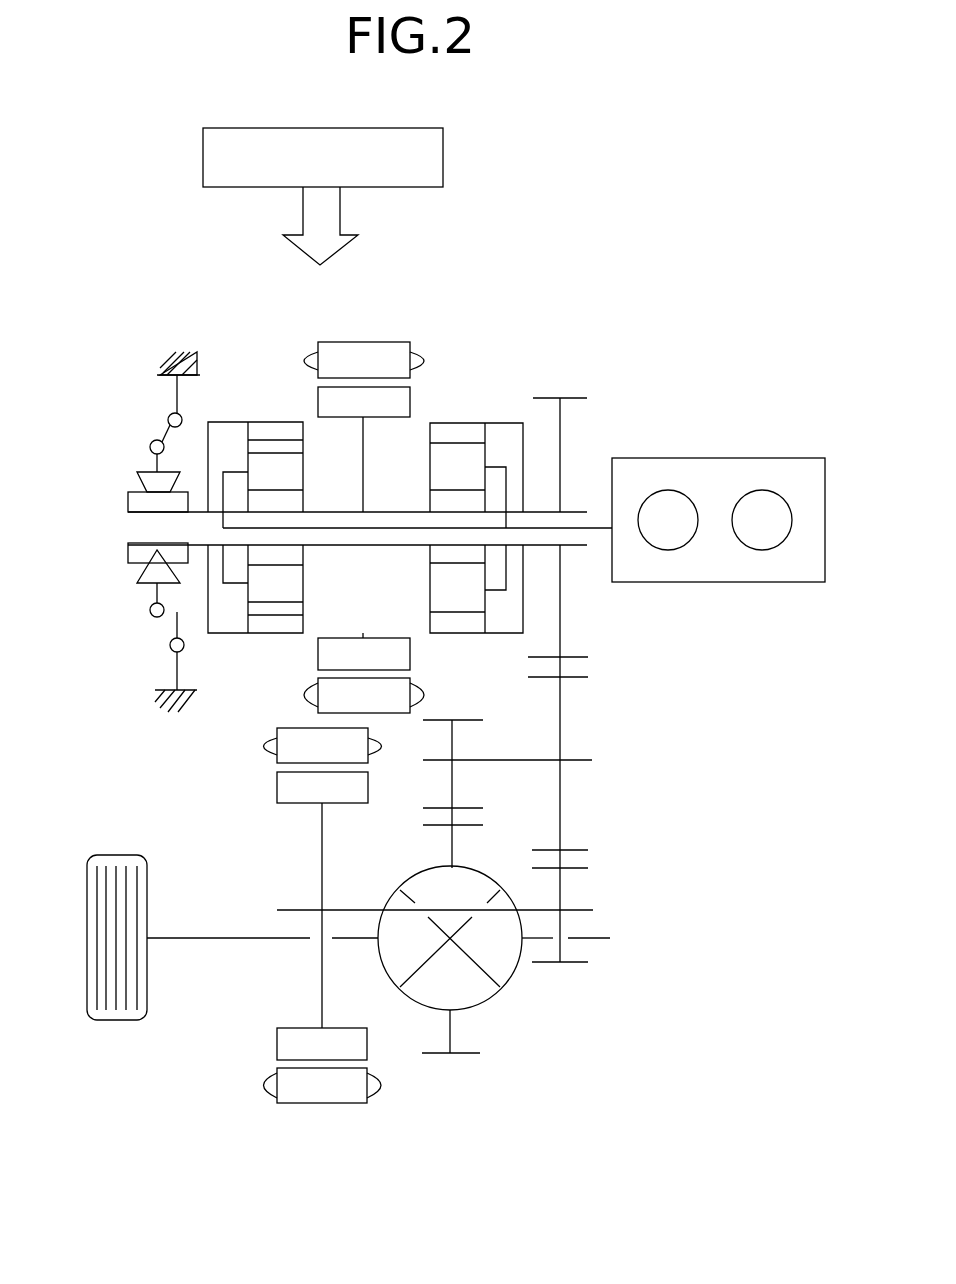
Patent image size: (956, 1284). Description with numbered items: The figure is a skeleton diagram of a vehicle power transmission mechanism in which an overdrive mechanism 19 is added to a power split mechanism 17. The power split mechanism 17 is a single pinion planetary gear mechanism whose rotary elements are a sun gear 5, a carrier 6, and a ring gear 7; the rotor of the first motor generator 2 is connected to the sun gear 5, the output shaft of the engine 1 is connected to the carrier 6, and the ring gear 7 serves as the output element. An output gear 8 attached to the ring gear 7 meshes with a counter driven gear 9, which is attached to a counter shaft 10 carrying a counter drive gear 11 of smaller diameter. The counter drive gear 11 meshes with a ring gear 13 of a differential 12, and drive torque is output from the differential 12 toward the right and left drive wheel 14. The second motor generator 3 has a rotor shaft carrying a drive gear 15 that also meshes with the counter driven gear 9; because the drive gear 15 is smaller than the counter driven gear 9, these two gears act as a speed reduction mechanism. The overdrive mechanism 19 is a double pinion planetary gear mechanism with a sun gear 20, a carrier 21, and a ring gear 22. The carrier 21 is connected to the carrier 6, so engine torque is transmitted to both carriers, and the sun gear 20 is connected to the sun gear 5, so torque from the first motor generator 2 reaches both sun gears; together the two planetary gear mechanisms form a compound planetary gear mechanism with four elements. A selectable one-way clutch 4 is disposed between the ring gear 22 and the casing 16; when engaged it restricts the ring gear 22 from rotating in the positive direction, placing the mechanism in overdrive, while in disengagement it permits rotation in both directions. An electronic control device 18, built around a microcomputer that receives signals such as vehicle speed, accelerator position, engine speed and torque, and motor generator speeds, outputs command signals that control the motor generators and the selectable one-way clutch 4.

The engine 1 is at (750, 458).
The first motor generator 2 is at (362, 338).
The second motor generator 3 is at (330, 1095).
The selectable one-way clutch 4 is at (120, 482).
The sun gear 5 is at (437, 504).
The carrier 6 is at (513, 468).
The ring gear 7 is at (461, 428).
The output gear 8 is at (575, 395).
The counter driven gear 9 is at (572, 678).
The counter shaft 10 is at (573, 762).
The counter drive gear 11 is at (473, 717).
The differential 12 is at (485, 1005).
The ring gear 13 is at (443, 1055).
The drive wheel 14 is at (122, 1022).
The drive gear 15 is at (578, 963).
The casing 16 is at (180, 350).
The power split mechanism 17 is at (492, 378).
The electronic control device 18 is at (443, 157).
The overdrive mechanism 19 is at (265, 655).
The sun gear 20 is at (293, 553).
The carrier 21 is at (236, 470).
The ring gear 22 is at (283, 425).